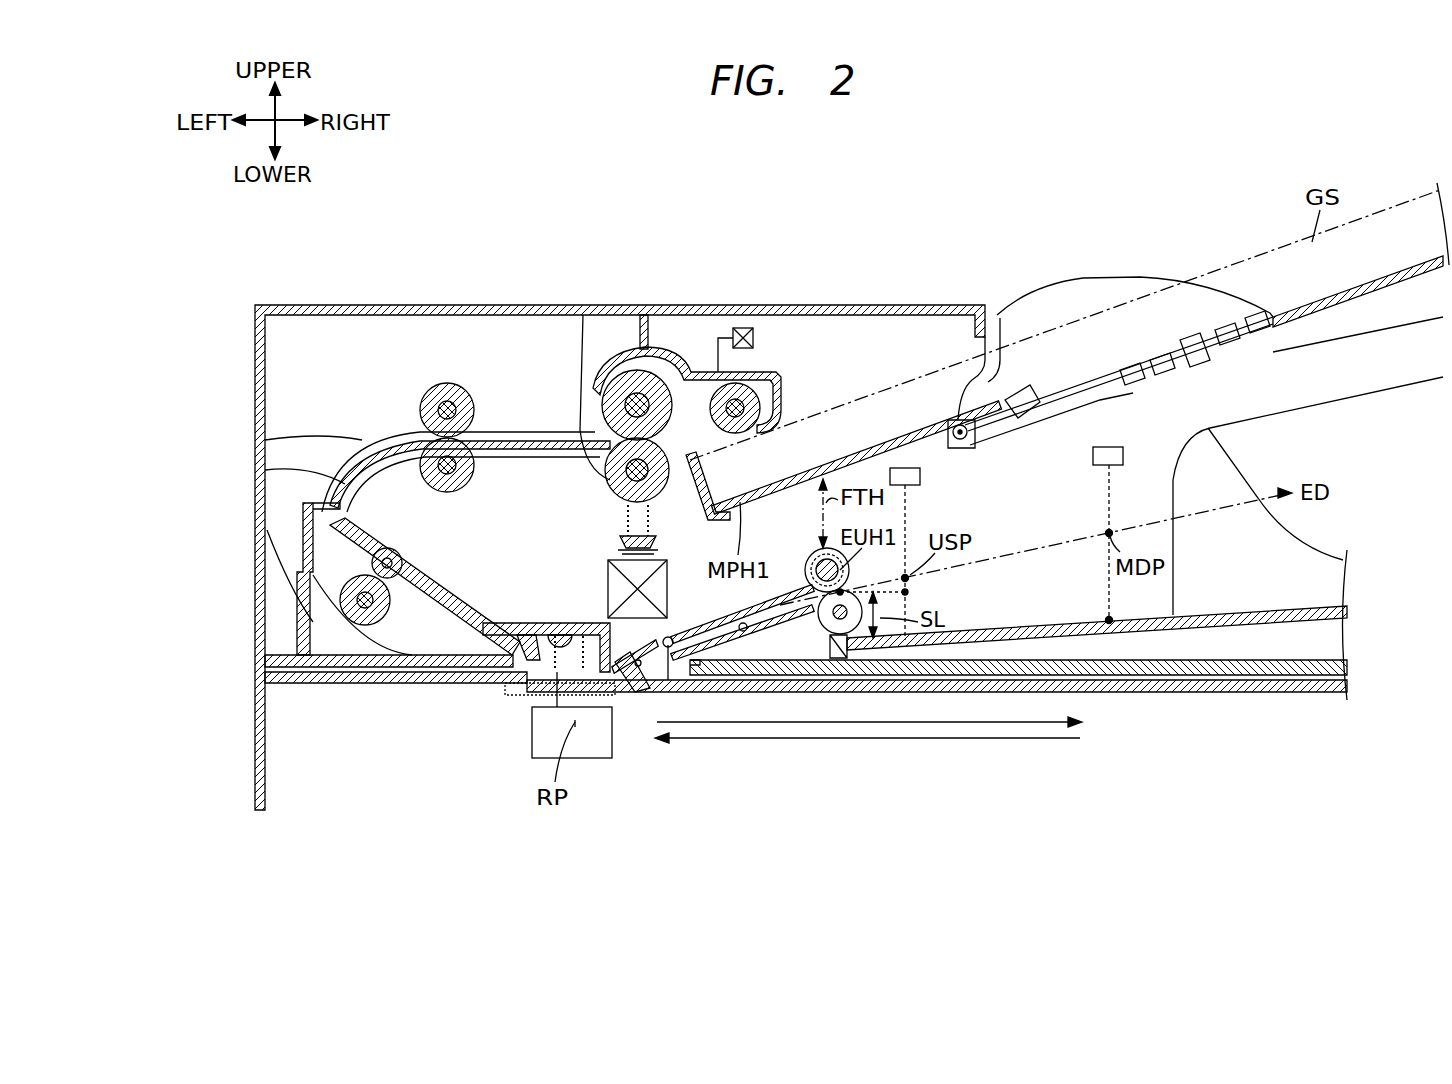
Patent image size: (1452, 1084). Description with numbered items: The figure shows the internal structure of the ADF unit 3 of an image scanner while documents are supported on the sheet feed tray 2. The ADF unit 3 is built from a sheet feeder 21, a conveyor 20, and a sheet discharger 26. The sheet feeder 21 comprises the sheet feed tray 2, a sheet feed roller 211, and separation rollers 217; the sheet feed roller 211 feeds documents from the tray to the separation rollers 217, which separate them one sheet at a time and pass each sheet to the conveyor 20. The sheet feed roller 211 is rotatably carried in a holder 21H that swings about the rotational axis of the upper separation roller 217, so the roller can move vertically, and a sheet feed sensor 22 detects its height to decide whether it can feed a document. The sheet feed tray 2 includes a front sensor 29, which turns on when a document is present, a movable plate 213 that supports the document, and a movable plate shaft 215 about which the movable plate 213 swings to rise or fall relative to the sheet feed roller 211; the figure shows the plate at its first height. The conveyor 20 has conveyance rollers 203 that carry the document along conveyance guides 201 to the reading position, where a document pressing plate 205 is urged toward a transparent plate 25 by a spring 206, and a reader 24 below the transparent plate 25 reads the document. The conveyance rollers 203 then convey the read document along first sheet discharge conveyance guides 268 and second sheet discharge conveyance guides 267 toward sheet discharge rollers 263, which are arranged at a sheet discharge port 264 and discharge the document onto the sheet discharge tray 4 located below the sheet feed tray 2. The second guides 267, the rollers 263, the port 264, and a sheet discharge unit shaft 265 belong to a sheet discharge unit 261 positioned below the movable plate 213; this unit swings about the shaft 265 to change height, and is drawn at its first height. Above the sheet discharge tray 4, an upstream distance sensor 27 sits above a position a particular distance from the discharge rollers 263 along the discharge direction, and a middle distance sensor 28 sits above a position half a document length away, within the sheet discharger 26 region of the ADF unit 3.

The ADF unit 3 is at (508, 192).
The conveyor 20 is at (361, 504).
The conveyance guides 201 is at (372, 452).
The conveyance rollers 203 is at (373, 573).
The document pressing plate 205 is at (342, 610).
The spring 206 is at (560, 640).
The sheet feeder 21 is at (768, 393).
The separation rollers 217 is at (610, 462).
The holder 21H is at (647, 350).
The sheet feed roller 211 is at (722, 385).
The sheet feed sensor 22 is at (755, 338).
The sheet feed tray 2 is at (1064, 402).
The movable plate 213 is at (895, 442).
The movable plate shaft 215 is at (948, 428).
The front sensor 29 is at (1013, 400).
The upstream distance sensor 27 is at (920, 478).
The middle distance sensor 28 is at (1123, 457).
The transparent plate 25 is at (505, 690).
The reader 24 is at (592, 760).
The sheet discharger 26 is at (979, 710).
The sheet discharge unit 261 is at (764, 687).
The sheet discharge unit shaft 265 is at (720, 625).
The second sheet discharge conveyance guides 267 is at (745, 637).
The sheet discharge port 264 is at (812, 615).
The sheet discharge rollers 263 is at (850, 620).
The first sheet discharge conveyance guides 268 is at (641, 733).
The sheet discharge tray 4 is at (1020, 640).